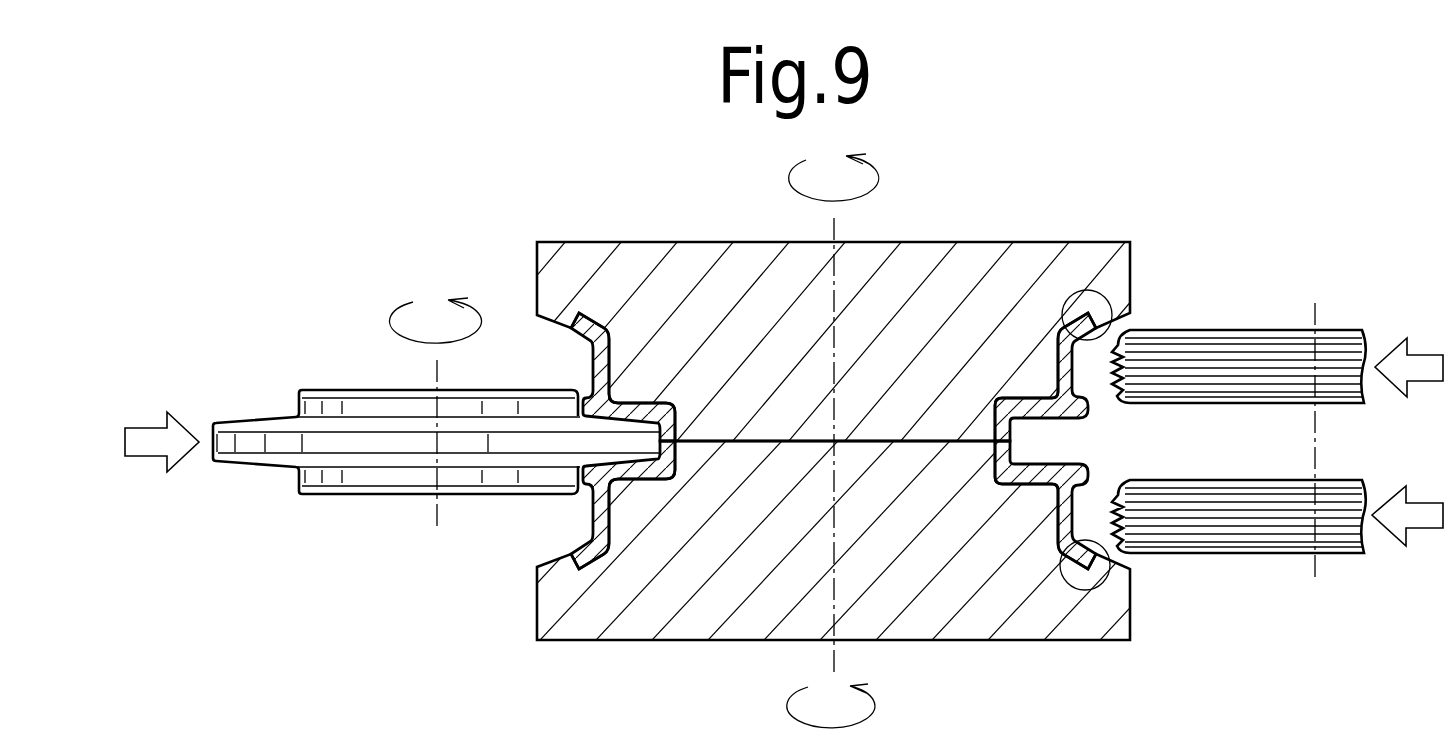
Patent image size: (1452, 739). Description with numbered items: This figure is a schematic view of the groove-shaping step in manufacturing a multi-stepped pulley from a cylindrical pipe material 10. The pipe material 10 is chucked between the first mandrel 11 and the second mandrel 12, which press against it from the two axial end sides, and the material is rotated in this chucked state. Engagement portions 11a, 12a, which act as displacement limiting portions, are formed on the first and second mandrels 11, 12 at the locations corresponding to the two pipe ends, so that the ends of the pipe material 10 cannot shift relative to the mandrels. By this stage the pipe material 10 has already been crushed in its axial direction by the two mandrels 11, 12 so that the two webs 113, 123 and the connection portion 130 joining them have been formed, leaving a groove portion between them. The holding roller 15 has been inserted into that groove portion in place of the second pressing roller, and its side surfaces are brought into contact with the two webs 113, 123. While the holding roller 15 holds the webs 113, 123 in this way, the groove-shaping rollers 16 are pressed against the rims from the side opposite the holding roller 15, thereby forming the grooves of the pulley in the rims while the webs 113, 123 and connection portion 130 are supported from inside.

The pipe material 10 is at (1078, 360).
The first mandrel 11 is at (1042, 242).
The engagement portion 11a is at (1103, 290).
The second mandrel 12 is at (1053, 643).
The engagement portion 12a is at (1120, 608).
The holding roller 15 is at (348, 500).
The groove-shaping rollers 16 is at (1291, 554).
The web 113 is at (1052, 418).
The web 123 is at (1058, 460).
The connection portion 130 is at (1012, 442).